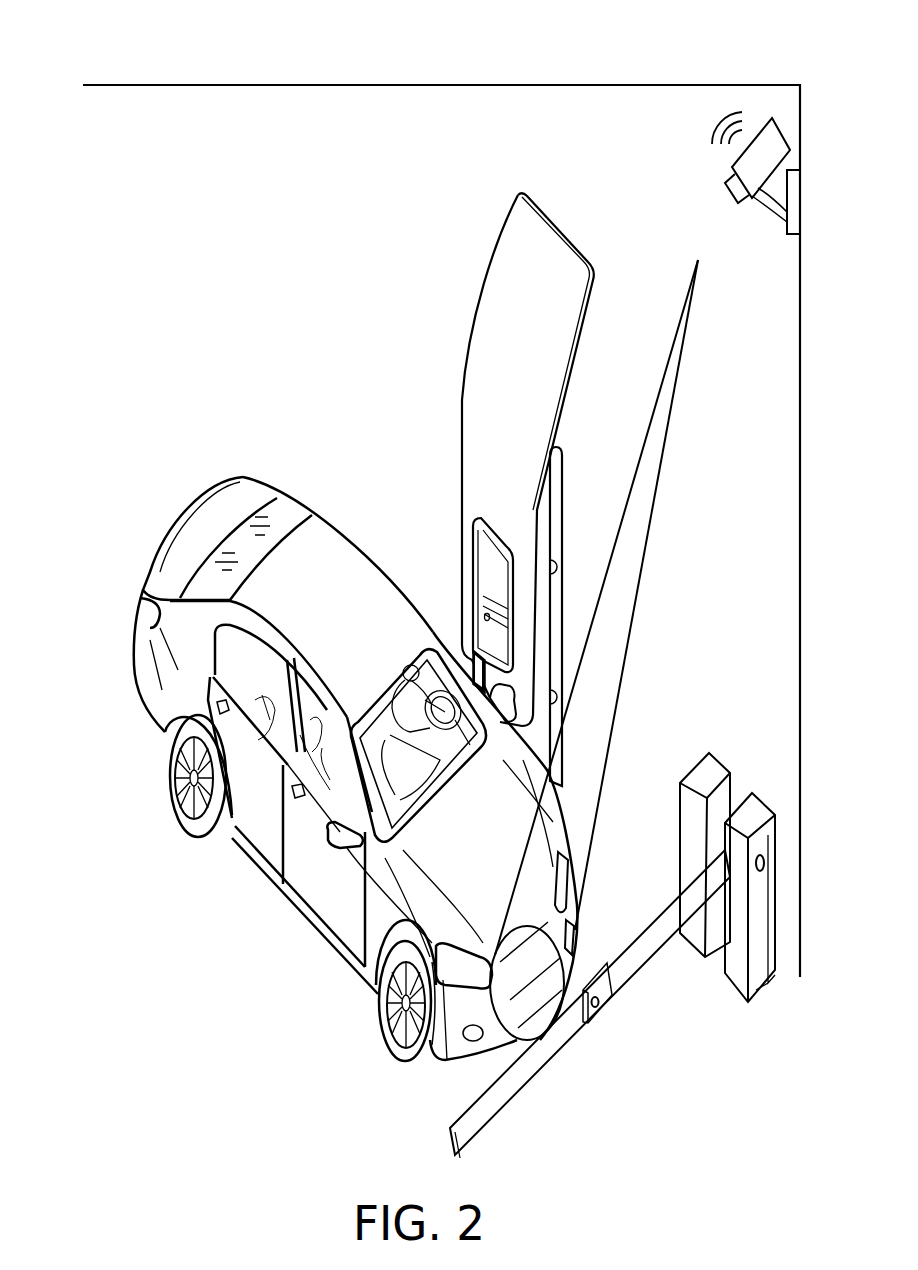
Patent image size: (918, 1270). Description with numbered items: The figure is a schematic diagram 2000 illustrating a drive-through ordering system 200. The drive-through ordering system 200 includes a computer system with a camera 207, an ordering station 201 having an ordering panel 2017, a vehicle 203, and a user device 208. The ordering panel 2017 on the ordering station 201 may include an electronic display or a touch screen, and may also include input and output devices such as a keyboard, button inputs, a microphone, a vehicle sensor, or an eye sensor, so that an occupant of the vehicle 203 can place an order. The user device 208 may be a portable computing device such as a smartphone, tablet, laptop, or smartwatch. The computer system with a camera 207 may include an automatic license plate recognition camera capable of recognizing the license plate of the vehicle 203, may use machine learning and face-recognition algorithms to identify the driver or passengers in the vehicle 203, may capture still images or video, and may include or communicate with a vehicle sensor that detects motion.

The drive-through ordering system 200 is at (52, 130).
The schematic diagram 2000 is at (482, 54).
The ordering station 201 is at (553, 465).
The ordering panel 2017 is at (515, 546).
The vehicle 203 is at (238, 843).
The computer system with a camera 207 is at (810, 178).
The user device 208 is at (474, 654).